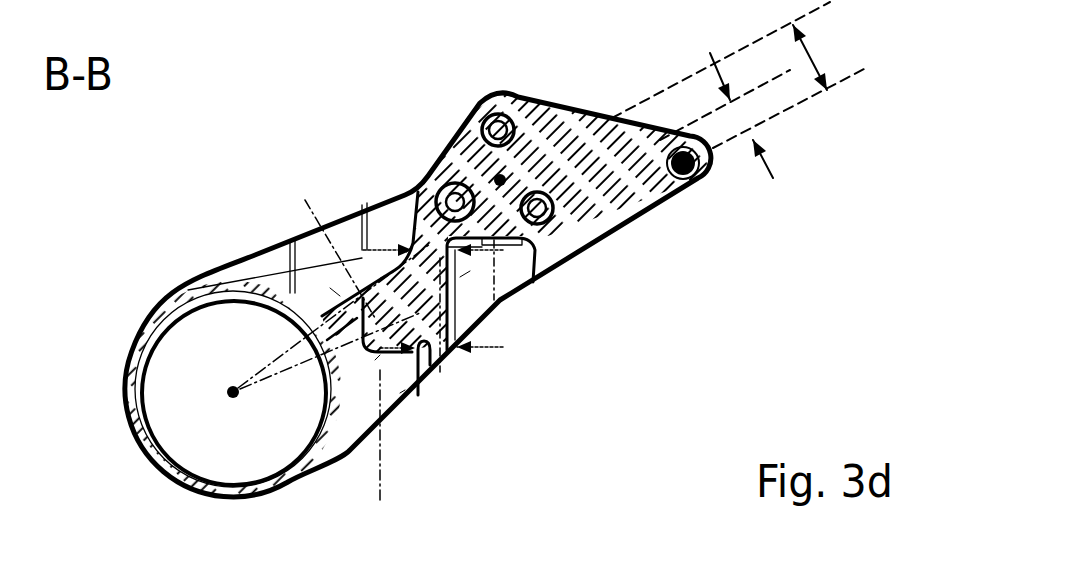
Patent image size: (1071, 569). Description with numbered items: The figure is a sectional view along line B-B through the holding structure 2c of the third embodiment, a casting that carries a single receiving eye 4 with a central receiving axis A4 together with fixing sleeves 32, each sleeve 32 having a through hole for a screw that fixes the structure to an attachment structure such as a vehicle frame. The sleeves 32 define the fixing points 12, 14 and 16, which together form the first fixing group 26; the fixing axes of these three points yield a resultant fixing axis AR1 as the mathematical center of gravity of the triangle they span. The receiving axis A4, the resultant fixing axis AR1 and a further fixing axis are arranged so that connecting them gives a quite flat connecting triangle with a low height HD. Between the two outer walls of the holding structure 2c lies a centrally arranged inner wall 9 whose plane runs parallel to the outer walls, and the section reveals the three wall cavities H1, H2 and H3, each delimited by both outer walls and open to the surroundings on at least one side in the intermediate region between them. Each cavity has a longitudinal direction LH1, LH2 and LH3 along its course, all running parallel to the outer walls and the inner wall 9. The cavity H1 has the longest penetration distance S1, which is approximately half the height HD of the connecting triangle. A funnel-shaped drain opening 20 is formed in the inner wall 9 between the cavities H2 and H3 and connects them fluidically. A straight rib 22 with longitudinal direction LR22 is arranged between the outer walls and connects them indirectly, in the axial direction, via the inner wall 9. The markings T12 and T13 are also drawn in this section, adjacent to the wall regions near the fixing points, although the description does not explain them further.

The holding structure 2c is at (252, 246).
The receiving eye 4 is at (147, 410).
The receiving axis A4 is at (240, 398).
The fixing point 16 is at (531, 145).
The fixing point 14 is at (482, 118).
The inner wall 9 is at (513, 117).
The fixing group 26 is at (505, 176).
The fixing point 12 is at (418, 188).
The fixing sleeve 32 is at (442, 172).
The height of the connecting triangle HD is at (806, 60).
The penetration distance S1 is at (770, 167).
The resultant fixing axis AR1 is at (545, 250).
The cavity H1 is at (460, 277).
The longitudinal direction LH1 is at (463, 272).
The depth 12 T12 is at (520, 348).
The depth 13 T13 is at (393, 238).
The longitudinal direction LR22 is at (470, 330).
The cavity H2 is at (403, 382).
The drain opening 20 is at (375, 360).
The rib 22 is at (445, 355).
The cavity H3 is at (337, 293).
The longitudinal direction LH3 is at (317, 213).
The longitudinal direction LH2 is at (383, 487).